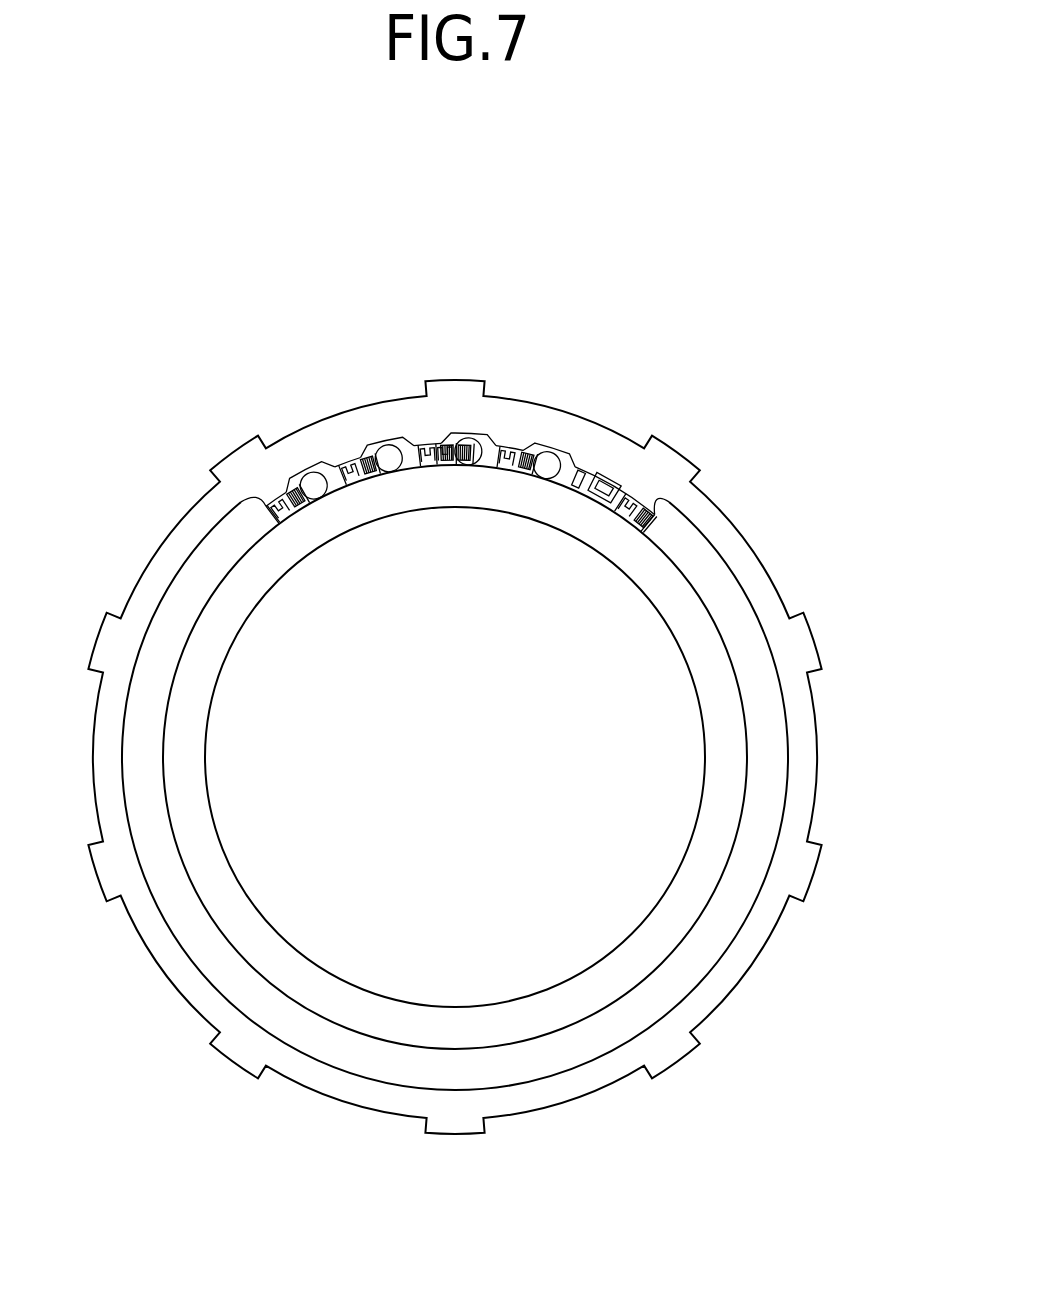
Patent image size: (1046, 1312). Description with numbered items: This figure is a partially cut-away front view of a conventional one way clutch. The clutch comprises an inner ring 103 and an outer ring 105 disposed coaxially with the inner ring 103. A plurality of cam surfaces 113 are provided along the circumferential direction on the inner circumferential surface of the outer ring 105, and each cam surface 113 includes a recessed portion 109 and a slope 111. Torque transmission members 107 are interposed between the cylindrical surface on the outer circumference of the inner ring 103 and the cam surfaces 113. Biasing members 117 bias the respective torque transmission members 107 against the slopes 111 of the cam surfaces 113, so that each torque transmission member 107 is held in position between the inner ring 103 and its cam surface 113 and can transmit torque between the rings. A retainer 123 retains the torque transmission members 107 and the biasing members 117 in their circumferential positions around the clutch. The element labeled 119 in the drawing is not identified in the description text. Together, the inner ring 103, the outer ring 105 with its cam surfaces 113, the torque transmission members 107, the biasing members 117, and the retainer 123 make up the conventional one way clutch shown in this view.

The inner ring 103 is at (215, 628).
The outer ring 105 is at (571, 438).
The torque transmission member 107 is at (470, 452).
The recessed portion 109 is at (373, 455).
The slope 111 is at (397, 447).
The cam surface 113 is at (380, 438).
The biasing member 117 is at (448, 440).
The stopper block 119 is at (615, 485).
The retainer 123 is at (686, 548).